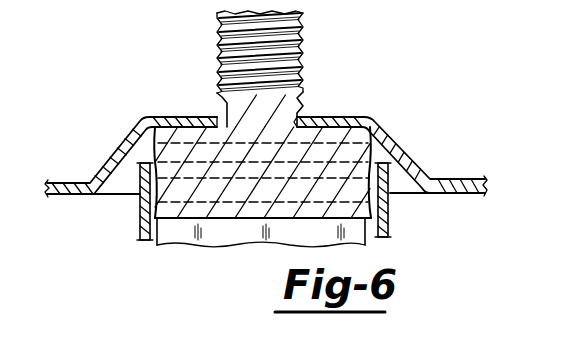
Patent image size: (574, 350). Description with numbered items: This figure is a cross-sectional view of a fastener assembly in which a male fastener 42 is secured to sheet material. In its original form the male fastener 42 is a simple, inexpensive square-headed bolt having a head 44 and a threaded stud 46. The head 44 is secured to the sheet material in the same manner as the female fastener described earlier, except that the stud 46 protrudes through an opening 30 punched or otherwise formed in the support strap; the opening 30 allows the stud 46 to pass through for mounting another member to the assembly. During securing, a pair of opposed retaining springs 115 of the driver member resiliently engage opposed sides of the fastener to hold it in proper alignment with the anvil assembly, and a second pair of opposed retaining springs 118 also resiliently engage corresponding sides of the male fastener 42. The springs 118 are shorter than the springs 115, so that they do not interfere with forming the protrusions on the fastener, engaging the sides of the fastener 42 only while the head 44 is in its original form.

The opening 30 is at (222, 118).
The threaded stud 46 is at (301, 53).
The head 44 is at (143, 228).
The retaining springs 115 is at (140, 240).
The male fastener 42 is at (167, 246).
The second pair of opposed retaining springs 118 is at (180, 226).